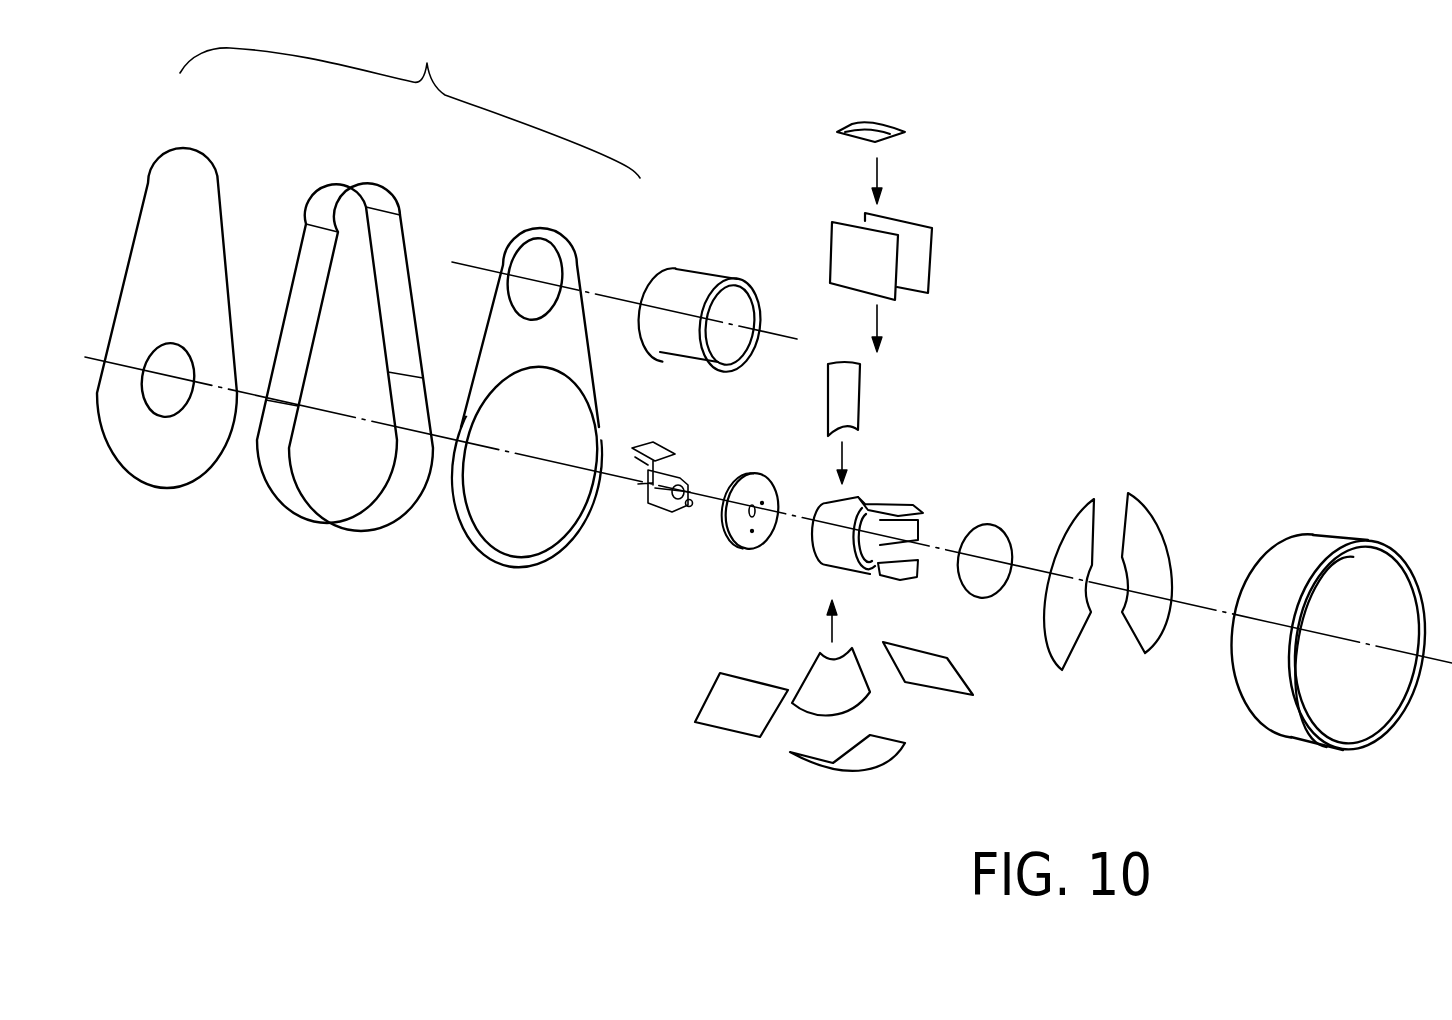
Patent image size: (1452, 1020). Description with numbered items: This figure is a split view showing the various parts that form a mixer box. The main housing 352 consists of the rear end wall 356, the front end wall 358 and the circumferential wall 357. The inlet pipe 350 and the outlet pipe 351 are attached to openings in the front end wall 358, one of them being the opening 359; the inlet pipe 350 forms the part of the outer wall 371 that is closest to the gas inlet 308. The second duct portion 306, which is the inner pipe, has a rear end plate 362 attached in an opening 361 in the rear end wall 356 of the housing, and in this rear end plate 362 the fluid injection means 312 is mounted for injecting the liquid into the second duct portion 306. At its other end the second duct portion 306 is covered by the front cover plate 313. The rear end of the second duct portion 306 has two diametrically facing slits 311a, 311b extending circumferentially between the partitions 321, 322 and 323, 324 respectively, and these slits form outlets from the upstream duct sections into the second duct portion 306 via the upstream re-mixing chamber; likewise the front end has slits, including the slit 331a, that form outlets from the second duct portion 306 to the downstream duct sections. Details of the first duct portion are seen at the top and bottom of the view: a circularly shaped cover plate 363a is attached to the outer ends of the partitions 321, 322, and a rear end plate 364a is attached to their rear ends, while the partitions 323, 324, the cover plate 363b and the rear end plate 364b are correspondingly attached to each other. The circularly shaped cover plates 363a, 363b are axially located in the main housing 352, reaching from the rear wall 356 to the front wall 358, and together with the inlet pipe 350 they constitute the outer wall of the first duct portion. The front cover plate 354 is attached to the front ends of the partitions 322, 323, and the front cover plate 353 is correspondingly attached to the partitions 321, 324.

The main housing 352 is at (410, 104).
The rear end wall 356 is at (180, 193).
The opening 361 is at (167, 420).
The circumferential wall 357 is at (338, 207).
The front end wall 358 is at (545, 235).
The outlet pipe 351 is at (680, 290).
The opening 359 is at (740, 283).
The fluid injection means 312 is at (660, 500).
The rear end plate 362 is at (722, 530).
The second duct portion 306 is at (790, 567).
The slit 311a is at (857, 497).
The slit 311b is at (863, 553).
The slit 331a is at (862, 570).
The circularly shaped cover plate 363a is at (872, 132).
The circularly shaped cover plate 363b is at (868, 753).
The partition 322 is at (913, 250).
The partition 321 is at (872, 266).
The rear end plate 364a is at (845, 397).
The rear end plate 364b is at (817, 693).
The front cover plate 313 is at (992, 540).
The front cover plate 353 is at (1085, 527).
The front cover plate 354 is at (1140, 548).
The inlet pipe 350 is at (1308, 553).
The gas inlet 308 is at (1390, 715).
The outer wall 371 is at (1340, 672).
The partition 324 is at (735, 698).
The partition 323 is at (930, 680).